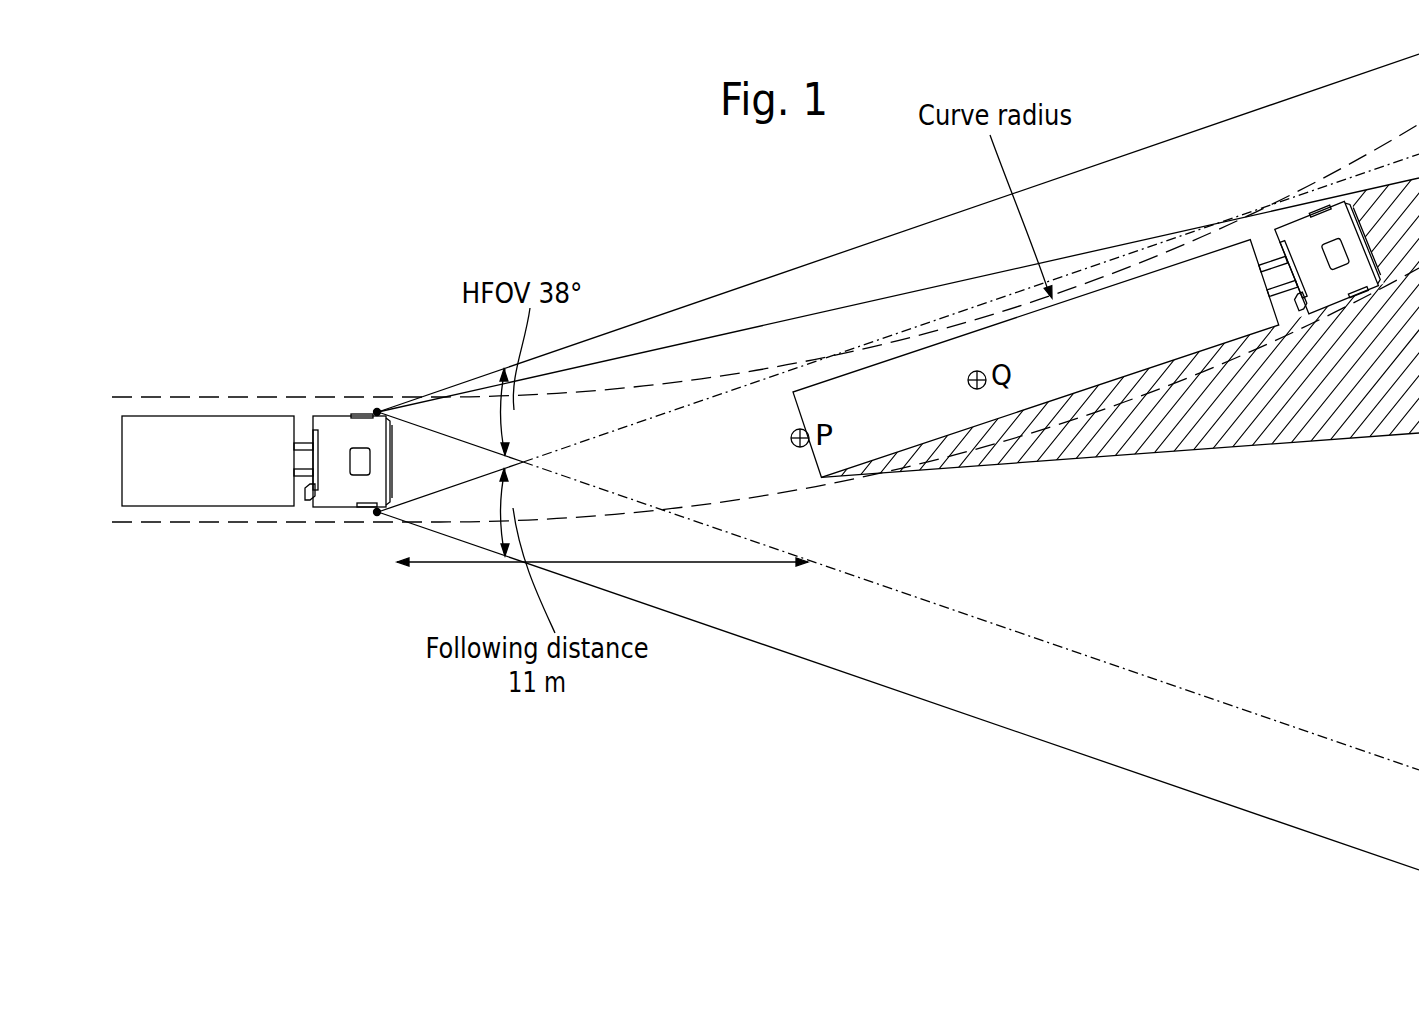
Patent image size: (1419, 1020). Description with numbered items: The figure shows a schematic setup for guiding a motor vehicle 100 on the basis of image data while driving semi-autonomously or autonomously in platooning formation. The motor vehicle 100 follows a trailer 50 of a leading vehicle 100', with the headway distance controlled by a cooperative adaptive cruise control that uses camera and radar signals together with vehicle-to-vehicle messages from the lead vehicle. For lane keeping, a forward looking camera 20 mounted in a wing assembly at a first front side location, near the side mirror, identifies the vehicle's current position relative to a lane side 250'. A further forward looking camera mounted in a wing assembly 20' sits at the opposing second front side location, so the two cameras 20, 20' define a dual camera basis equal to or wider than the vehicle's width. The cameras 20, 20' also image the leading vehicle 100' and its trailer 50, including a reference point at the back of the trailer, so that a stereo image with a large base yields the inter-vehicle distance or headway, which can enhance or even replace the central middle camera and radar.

The forward looking camera 20 is at (356, 345).
The further forward looking camera mounted in a wing assembly 20' is at (348, 563).
The trailer 50 is at (228, 475).
The motor vehicle 100 is at (317, 515).
The leading vehicle 100' is at (1321, 351).
The lane side 250' is at (765, 323).